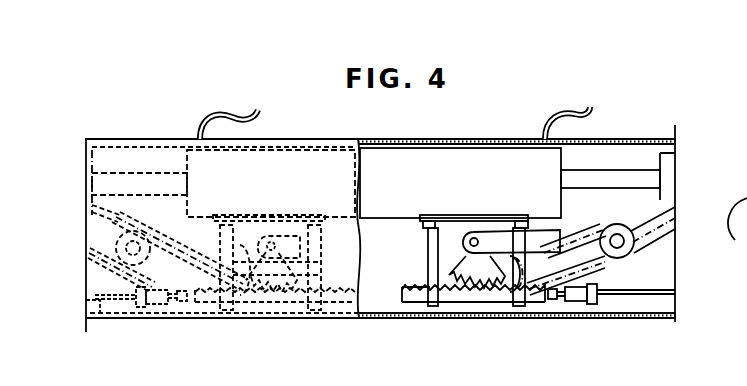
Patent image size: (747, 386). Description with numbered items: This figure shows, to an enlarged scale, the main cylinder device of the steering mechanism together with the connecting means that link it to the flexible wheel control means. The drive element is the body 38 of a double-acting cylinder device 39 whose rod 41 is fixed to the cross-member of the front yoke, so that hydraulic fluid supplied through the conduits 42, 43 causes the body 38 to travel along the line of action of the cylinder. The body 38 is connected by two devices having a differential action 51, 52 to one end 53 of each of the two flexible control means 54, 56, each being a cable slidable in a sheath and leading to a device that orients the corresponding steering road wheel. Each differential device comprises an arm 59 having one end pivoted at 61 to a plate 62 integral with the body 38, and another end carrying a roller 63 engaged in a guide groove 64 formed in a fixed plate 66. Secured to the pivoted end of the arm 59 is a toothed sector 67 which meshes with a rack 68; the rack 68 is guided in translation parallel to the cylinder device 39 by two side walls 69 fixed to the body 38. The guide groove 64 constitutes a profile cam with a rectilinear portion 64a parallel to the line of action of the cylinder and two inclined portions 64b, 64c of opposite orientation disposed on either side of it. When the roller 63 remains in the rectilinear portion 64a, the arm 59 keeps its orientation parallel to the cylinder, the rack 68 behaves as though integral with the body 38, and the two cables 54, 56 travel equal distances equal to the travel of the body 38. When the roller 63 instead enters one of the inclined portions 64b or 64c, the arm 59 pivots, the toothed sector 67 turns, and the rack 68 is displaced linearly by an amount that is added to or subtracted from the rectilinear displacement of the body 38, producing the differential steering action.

The body 38 is at (480, 160).
The double-acting cylinder device 39 is at (584, 170).
The rod 41 is at (640, 170).
The conduit 42 is at (240, 116).
The conduit 43 is at (574, 110).
The device having a differential action 51 is at (272, 318).
The device having a differential action 52 is at (555, 302).
The end 53 is at (593, 304).
The flexible control means 54 is at (100, 305).
The flexible control means 56 is at (652, 296).
The arm 59 is at (540, 243).
The pivot 61 is at (475, 238).
The plate 62 is at (436, 237).
The roller 63 is at (125, 279).
The guide groove 64 is at (110, 266).
The rectilinear portion 64a is at (156, 215).
The inclined portion 64c is at (94, 217).
The inclined portion 64b is at (184, 298).
The fixed plate 66 is at (120, 148).
The toothed sector 67 is at (503, 286).
The rack 68 is at (462, 300).
The side wall 69 is at (434, 265).